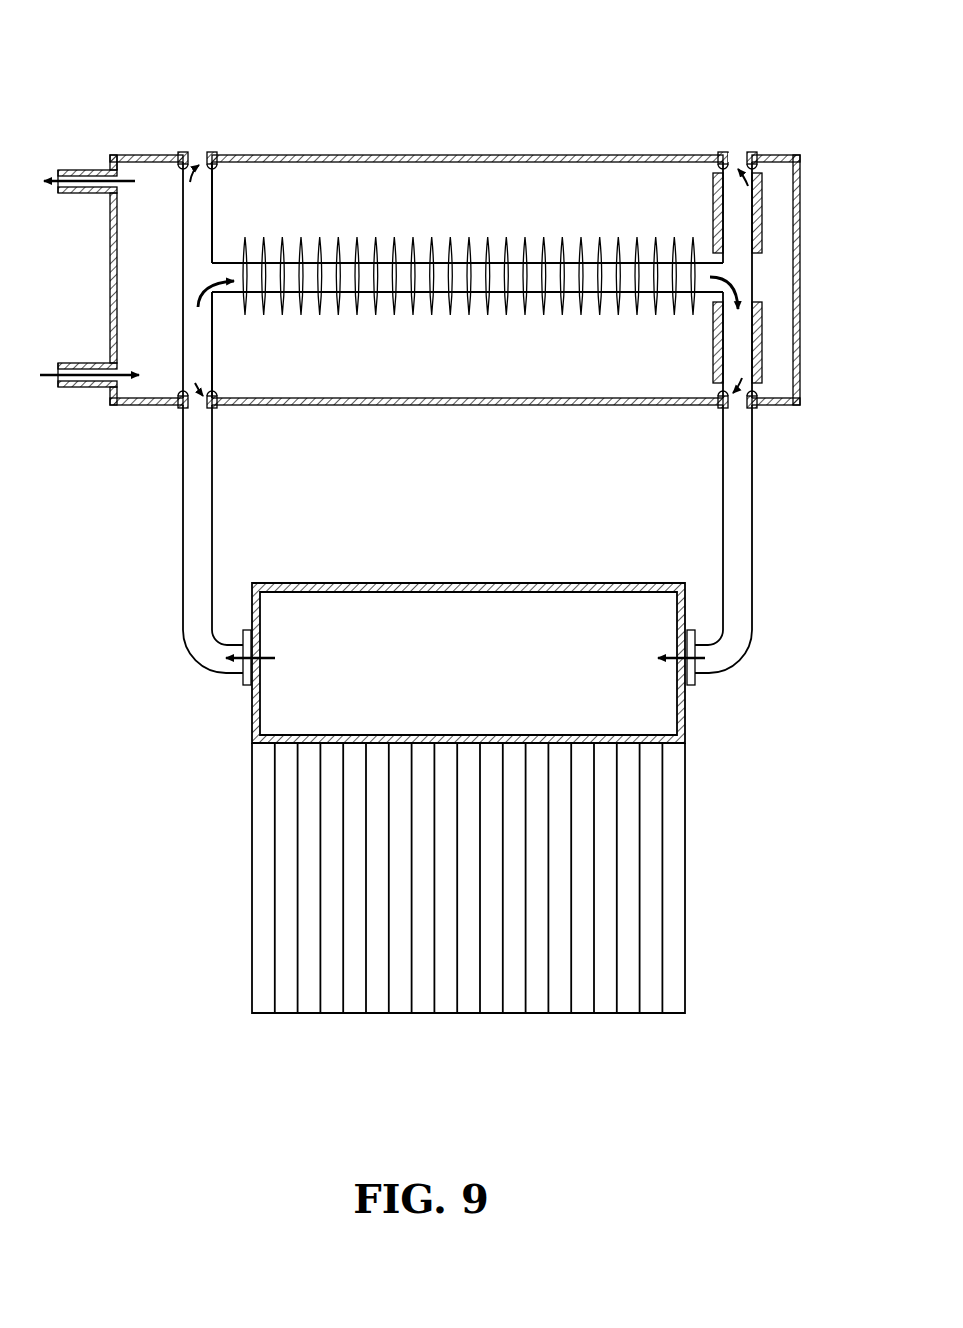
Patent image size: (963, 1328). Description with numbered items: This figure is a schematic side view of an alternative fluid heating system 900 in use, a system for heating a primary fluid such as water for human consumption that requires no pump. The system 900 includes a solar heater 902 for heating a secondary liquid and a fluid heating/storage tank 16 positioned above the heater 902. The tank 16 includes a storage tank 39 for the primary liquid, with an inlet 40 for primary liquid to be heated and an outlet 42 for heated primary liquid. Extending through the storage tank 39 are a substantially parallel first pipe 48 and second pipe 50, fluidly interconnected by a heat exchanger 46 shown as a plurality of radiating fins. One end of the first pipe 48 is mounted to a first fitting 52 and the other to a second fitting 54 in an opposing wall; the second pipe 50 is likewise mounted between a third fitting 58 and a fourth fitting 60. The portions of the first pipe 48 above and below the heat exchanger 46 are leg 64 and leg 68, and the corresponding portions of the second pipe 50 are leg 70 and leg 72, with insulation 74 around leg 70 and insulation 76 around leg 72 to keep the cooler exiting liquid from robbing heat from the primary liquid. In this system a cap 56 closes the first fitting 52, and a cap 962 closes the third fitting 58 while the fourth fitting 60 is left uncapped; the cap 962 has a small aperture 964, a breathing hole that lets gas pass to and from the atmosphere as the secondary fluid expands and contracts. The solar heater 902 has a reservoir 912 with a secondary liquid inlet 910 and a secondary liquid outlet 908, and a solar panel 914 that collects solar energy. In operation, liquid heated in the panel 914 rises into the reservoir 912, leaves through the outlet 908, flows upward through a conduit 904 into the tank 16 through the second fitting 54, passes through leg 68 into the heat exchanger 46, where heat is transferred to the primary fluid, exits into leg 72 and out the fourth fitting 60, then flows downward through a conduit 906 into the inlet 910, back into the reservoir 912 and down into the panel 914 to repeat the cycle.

The fluid heating system 900 is at (93, 66).
The solar heater 902 is at (118, 772).
The conduit 904 is at (183, 561).
The conduit 906 is at (752, 563).
The secondary liquid outlet 908 is at (236, 683).
The secondary liquid inlet 910 is at (707, 683).
The reservoir 912 is at (430, 582).
The solar panel 914 is at (246, 932).
The fluid heating/storage tank 16 is at (501, 132).
The storage tank 39 is at (800, 237).
The inlet 40 is at (87, 390).
The outlet 42 is at (90, 159).
The heat exchanger 46 is at (494, 225).
The first pipe 48 is at (183, 275).
The second pipe 50 is at (752, 272).
The first fitting 52 is at (165, 160).
The second fitting 54 is at (181, 386).
The cap 56 is at (197, 156).
The third fitting 58 is at (757, 174).
The fourth fitting 60 is at (758, 386).
The leg 64 is at (215, 192).
The leg 68 is at (215, 355).
The leg 70 is at (713, 190).
The leg 72 is at (713, 353).
The insulation 74 is at (762, 186).
The insulation 76 is at (762, 338).
The cap 962 is at (728, 151).
The aperture 964 is at (741, 145).